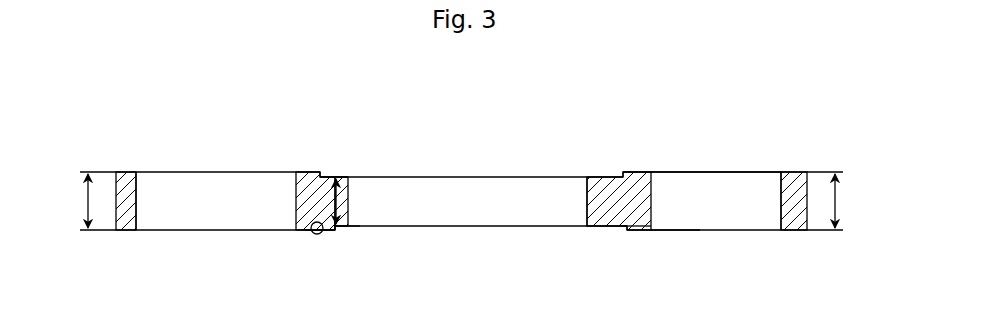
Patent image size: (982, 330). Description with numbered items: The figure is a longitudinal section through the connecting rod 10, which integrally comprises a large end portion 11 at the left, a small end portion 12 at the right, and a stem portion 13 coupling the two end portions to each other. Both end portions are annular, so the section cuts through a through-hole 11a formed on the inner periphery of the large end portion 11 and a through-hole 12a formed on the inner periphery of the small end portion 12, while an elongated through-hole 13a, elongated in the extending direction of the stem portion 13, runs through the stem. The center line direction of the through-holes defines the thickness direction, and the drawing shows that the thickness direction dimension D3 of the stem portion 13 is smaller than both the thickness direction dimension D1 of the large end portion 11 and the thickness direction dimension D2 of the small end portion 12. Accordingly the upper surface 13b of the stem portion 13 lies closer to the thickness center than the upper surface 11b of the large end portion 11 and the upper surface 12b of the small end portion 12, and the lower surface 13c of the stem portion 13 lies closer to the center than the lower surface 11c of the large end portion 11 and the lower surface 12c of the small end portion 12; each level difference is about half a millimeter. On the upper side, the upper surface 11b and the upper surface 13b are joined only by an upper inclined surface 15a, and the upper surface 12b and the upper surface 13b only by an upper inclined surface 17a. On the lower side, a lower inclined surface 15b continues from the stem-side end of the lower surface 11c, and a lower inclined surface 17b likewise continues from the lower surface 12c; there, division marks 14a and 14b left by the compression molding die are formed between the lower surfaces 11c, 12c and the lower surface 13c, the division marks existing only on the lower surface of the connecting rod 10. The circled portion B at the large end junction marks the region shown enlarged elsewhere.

The connecting rod 10 is at (705, 109).
The large end portion 11 is at (124, 171).
The through-hole 11a is at (137, 193).
The upper surface 11b is at (300, 169).
The lower surface 11c is at (305, 233).
The small end portion 12 is at (798, 171).
The through-hole 12a is at (781, 192).
The upper surface 12b is at (647, 172).
The lower surface 12c is at (641, 232).
The stem portion 13 is at (602, 181).
The elongated through-hole 13a is at (587, 205).
The upper surface 13b is at (340, 176).
The lower surface 13c is at (341, 236).
The division mark 14a is at (322, 235).
The division mark 14b is at (616, 229).
The upper inclined surface 15a is at (322, 175).
The lower inclined surface 15b is at (322, 233).
The upper inclined surface 17a is at (624, 172).
The lower inclined surface 17b is at (622, 232).
The portion B is at (313, 240).
The thickness direction dimension D1 is at (88, 200).
The thickness direction dimension D2 is at (843, 200).
The thickness direction dimension D3 is at (340, 196).